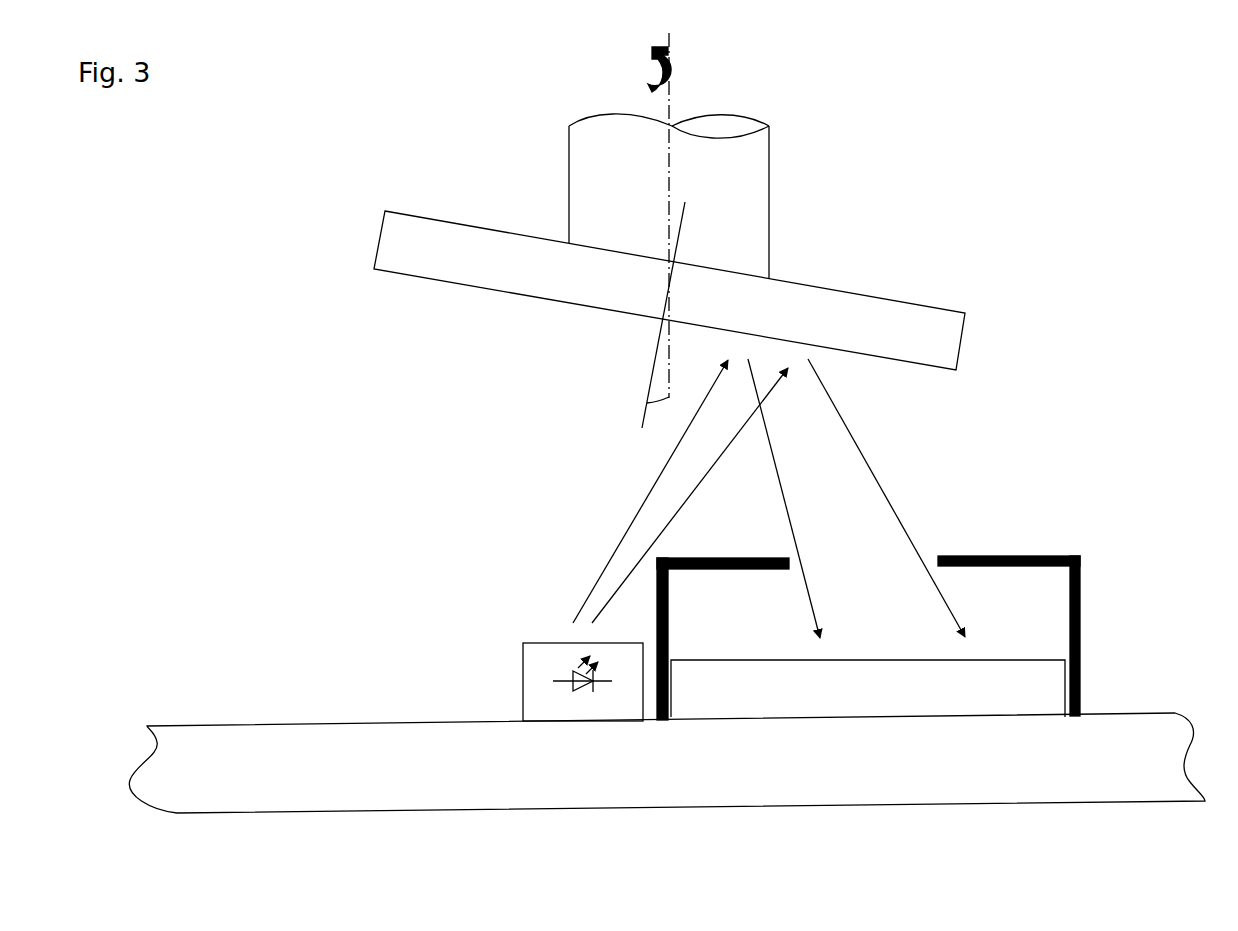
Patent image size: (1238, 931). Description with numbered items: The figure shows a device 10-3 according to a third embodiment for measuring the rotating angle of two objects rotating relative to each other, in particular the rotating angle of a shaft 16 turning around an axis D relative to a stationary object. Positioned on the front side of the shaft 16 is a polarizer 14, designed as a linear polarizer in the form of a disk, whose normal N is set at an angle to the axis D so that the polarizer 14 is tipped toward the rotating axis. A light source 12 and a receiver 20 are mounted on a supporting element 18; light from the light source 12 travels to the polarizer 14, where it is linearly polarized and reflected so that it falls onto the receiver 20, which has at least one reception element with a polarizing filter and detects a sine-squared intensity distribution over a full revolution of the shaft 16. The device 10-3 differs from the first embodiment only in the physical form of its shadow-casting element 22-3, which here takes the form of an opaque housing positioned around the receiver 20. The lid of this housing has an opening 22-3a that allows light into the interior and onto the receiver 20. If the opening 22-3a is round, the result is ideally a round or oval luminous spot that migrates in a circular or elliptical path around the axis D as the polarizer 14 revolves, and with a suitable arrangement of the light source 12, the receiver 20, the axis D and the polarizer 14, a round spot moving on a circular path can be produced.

The device 10-3 is at (941, 158).
The light source 12 is at (523, 665).
The polarizer 14 is at (943, 343).
The shaft 16 is at (748, 228).
The supporting element 18 is at (1128, 742).
The receiver 20 is at (1028, 686).
The shadow-casting element 22-3 is at (1030, 555).
The opening 22-3a is at (938, 555).
The axis D is at (668, 101).
The normal N is at (660, 324).